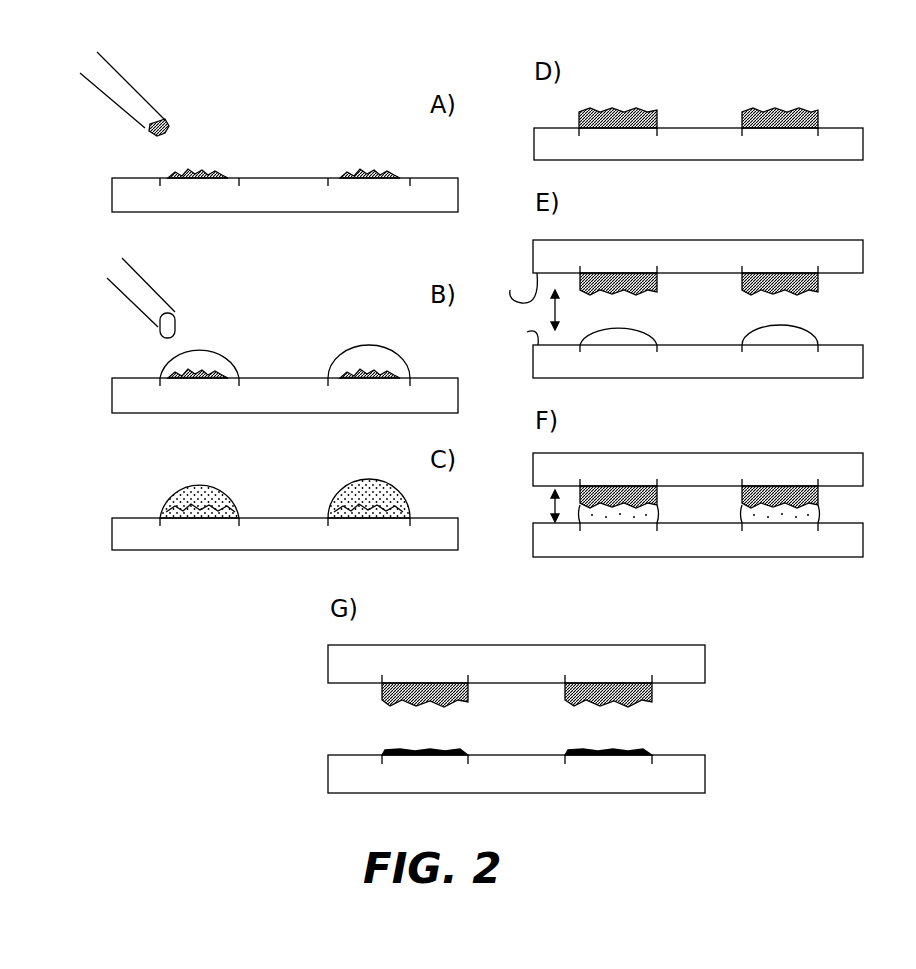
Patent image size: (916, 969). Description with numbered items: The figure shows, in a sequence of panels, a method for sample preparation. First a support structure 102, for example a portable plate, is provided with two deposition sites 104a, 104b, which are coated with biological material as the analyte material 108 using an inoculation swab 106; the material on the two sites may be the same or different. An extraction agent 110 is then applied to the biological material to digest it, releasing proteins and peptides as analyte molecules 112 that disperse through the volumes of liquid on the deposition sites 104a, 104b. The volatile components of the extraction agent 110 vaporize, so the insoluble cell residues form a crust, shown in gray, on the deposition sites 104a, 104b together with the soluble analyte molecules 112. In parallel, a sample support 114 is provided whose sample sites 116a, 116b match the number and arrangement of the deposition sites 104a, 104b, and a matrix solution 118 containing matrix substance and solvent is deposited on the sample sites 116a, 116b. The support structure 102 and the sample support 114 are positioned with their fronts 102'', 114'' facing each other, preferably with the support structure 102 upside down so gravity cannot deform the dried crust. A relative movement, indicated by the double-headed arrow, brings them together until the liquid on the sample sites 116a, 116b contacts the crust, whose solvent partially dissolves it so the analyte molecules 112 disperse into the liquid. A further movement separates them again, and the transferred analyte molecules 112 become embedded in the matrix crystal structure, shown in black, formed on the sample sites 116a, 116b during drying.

The support structure 102 is at (488, 405).
The first deposition site 104a is at (408, 417).
The second deposition site 104b is at (573, 417).
The inoculation swab 106 is at (126, 94).
The analyte material 108 is at (167, 128).
The extraction agent 110 is at (178, 330).
The analyte molecules 112 is at (568, 750).
The sample support 114 is at (596, 584).
The first sample site 116a is at (519, 566).
The second sample site 116b is at (691, 566).
The matrix solution 118 is at (740, 521).
The front of the support structure 102'' is at (512, 283).
The front of the sample support 114'' is at (513, 337).